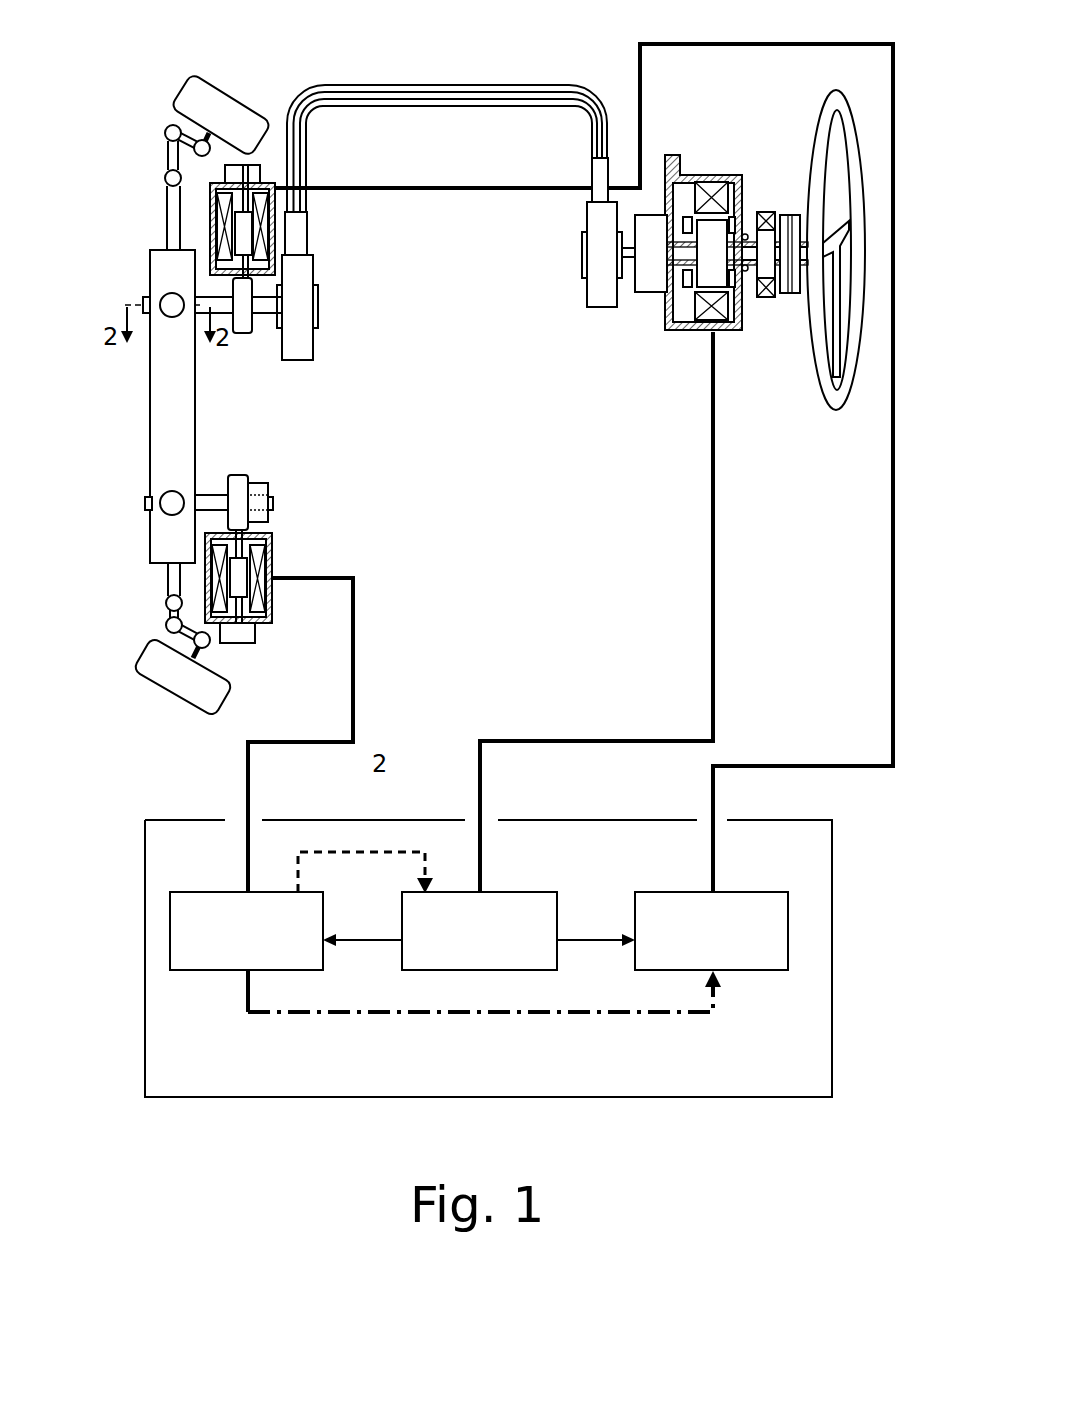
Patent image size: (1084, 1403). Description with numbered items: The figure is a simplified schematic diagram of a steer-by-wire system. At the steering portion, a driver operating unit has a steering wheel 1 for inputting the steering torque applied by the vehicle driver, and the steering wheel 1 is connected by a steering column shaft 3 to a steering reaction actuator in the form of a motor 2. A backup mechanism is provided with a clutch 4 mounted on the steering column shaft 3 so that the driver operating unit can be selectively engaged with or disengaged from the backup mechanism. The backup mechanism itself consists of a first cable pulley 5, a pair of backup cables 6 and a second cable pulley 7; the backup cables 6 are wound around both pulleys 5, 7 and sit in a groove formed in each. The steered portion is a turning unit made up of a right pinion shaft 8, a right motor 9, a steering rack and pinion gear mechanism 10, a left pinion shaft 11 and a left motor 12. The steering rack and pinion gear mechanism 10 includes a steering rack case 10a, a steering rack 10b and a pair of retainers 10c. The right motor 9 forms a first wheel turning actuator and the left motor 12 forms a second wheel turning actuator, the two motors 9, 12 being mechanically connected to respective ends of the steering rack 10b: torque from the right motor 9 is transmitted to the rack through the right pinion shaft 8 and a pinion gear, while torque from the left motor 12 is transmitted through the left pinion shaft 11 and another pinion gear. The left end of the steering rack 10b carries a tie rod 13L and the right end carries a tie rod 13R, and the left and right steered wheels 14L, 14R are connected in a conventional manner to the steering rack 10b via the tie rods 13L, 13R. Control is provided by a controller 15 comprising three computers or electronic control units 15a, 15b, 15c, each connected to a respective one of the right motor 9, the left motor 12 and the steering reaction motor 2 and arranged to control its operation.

The steering wheel 1 is at (815, 122).
The motor 2 is at (720, 176).
The steering column shaft 3 is at (740, 278).
The clutch 4 is at (648, 294).
The first cable pulley 5 is at (596, 308).
The backup cables 6 is at (470, 98).
The second cable pulley 7 is at (302, 349).
The right pinion shaft 8 is at (267, 312).
The right motor 9 is at (265, 180).
The steering rack and pinion gear mechanism 10 is at (210, 402).
The steering rack case 10a is at (160, 366).
The steering rack 10b is at (165, 578).
The retainers 10c is at (162, 300).
The left pinion shaft 11 is at (209, 497).
The left motor 12 is at (248, 590).
The tie rod 13R is at (182, 136).
The tie rod 13L is at (200, 643).
The right steered wheel 14R is at (208, 78).
The left steered wheel 14L is at (158, 688).
The controller 15 is at (832, 866).
The electronic control unit 15a is at (750, 973).
The electronic control unit 15b is at (195, 972).
The electronic control unit 15c is at (452, 973).